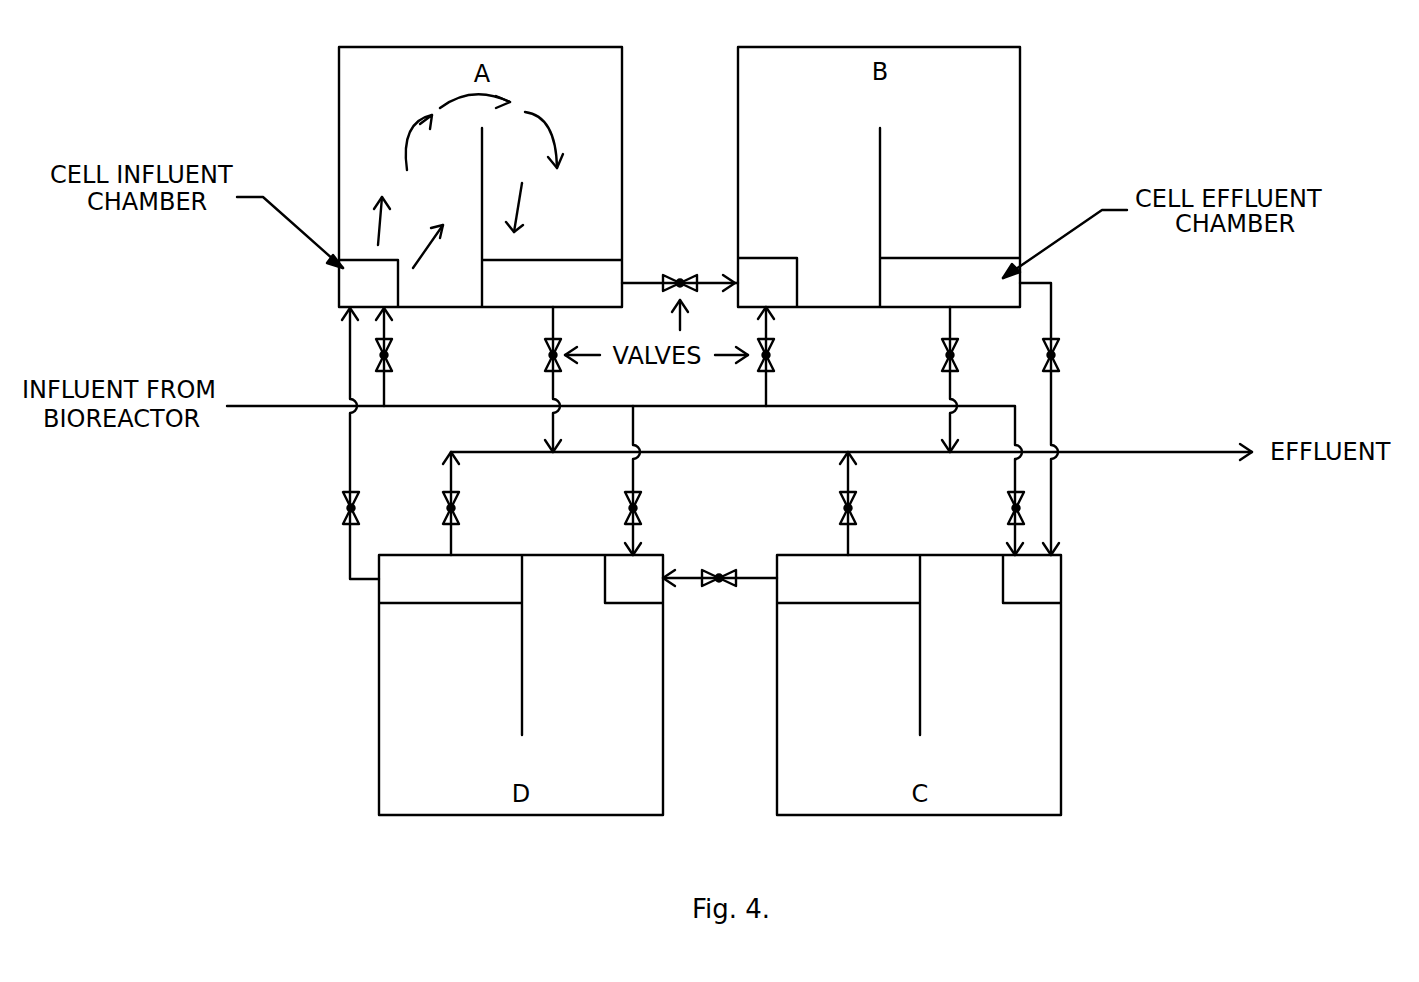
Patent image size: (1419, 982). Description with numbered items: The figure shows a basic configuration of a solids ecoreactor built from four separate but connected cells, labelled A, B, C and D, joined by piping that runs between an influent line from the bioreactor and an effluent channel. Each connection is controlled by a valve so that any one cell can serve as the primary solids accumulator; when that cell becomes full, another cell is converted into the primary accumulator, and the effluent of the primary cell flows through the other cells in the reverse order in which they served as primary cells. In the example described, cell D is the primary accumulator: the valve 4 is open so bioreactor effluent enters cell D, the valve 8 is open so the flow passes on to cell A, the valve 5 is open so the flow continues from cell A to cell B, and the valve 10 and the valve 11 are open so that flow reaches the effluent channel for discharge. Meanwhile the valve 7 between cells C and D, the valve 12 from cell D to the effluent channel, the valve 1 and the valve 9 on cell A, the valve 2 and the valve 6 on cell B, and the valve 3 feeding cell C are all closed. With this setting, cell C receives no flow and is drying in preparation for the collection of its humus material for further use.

The valve 1 is at (393, 357).
The valve 2 is at (777, 356).
The valve 3 is at (1005, 508).
The valve 4 is at (644, 480).
The valve 5 is at (680, 269).
The valve 6 is at (1050, 419).
The valve 7 is at (720, 564).
The valve 8 is at (339, 508).
The valve 9 is at (542, 379).
The valve 10 is at (932, 379).
The valve 11 is at (865, 503).
The valve 12 is at (468, 503).